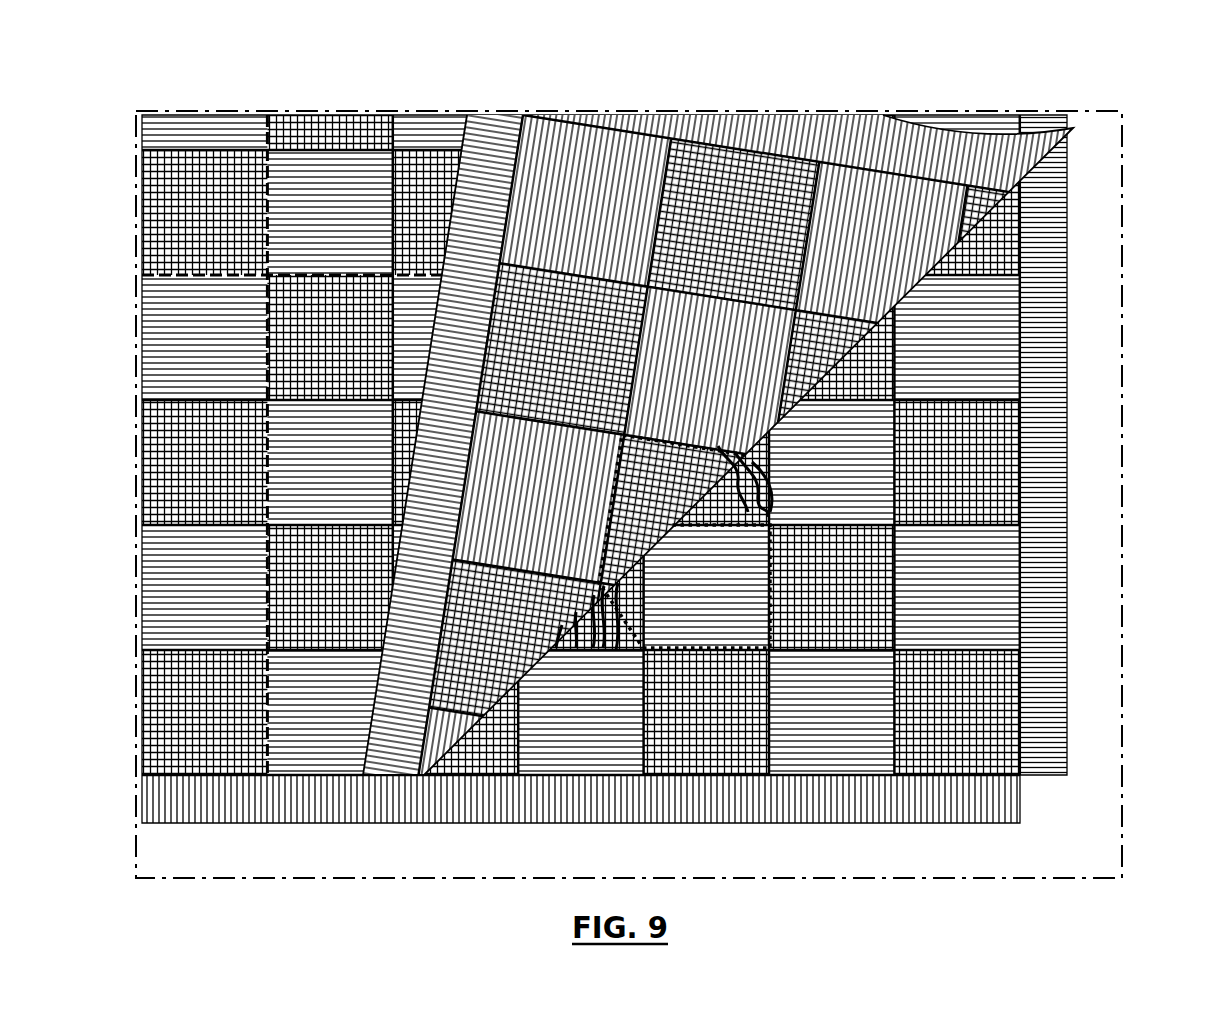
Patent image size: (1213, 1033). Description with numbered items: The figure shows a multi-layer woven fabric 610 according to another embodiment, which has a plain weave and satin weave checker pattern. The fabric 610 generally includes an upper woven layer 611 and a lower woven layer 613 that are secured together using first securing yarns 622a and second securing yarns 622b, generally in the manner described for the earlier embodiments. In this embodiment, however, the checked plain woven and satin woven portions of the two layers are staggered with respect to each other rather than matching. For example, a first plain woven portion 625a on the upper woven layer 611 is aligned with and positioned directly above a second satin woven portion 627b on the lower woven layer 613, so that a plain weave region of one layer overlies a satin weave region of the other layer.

The multi-layer woven fabric 610 is at (588, 85).
The upper woven layer 611 is at (571, 322).
The lower woven layer 613 is at (958, 465).
The first securing yarns 622a is at (264, 207).
The second securing yarns 622b is at (337, 275).
The first plain woven portion 625a is at (651, 473).
The second satin woven portion 627b is at (748, 606).